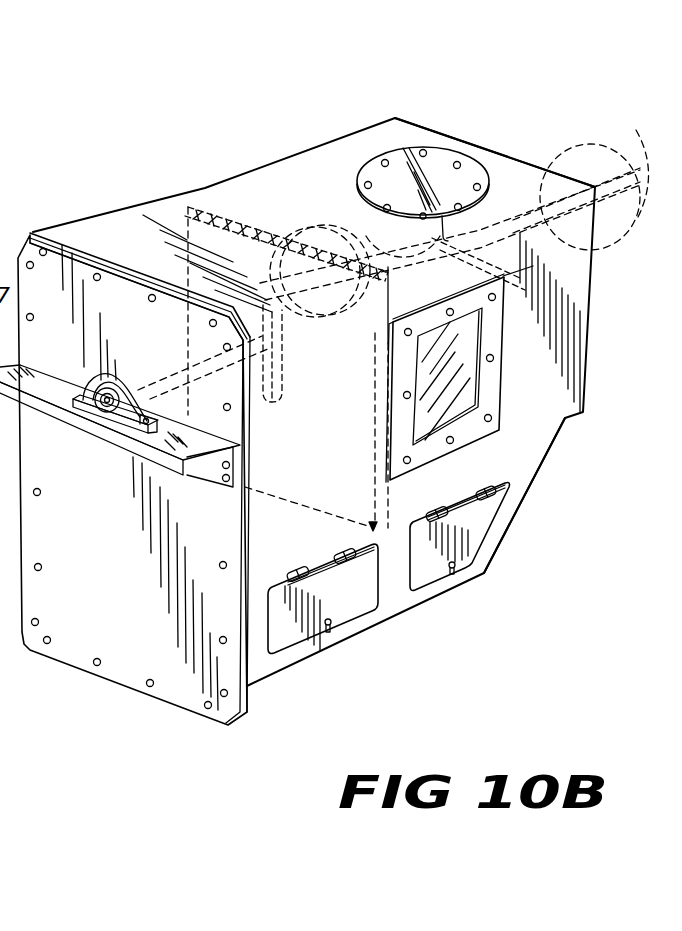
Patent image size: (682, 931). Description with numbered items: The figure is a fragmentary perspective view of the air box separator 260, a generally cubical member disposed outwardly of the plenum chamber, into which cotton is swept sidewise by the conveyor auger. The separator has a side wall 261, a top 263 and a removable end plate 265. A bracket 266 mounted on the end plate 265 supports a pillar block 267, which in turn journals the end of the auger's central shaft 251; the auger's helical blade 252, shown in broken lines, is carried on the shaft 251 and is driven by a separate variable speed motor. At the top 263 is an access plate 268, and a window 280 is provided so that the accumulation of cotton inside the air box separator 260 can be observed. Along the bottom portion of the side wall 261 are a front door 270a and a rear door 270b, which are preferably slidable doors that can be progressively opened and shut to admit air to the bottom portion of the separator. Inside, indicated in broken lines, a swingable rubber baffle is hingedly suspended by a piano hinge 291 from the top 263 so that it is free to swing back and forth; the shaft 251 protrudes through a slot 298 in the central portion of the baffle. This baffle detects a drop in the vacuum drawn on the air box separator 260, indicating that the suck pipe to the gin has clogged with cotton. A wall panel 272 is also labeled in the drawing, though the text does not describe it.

The air box separator 260 is at (143, 206).
The side wall 261 is at (580, 308).
The top 263 is at (108, 240).
The removable end plate 265 is at (100, 640).
The bracket 266 is at (79, 430).
The pillar block 267 is at (83, 397).
The shaft 251 is at (170, 372).
The helical blade 252 is at (567, 167).
The access plate 268 is at (437, 178).
The wall panel 272 is at (396, 119).
The window 280 is at (480, 407).
The piano hinge 291 is at (313, 226).
The slot 298 is at (284, 385).
The front door 270a is at (348, 615).
The rear door 270b is at (496, 518).